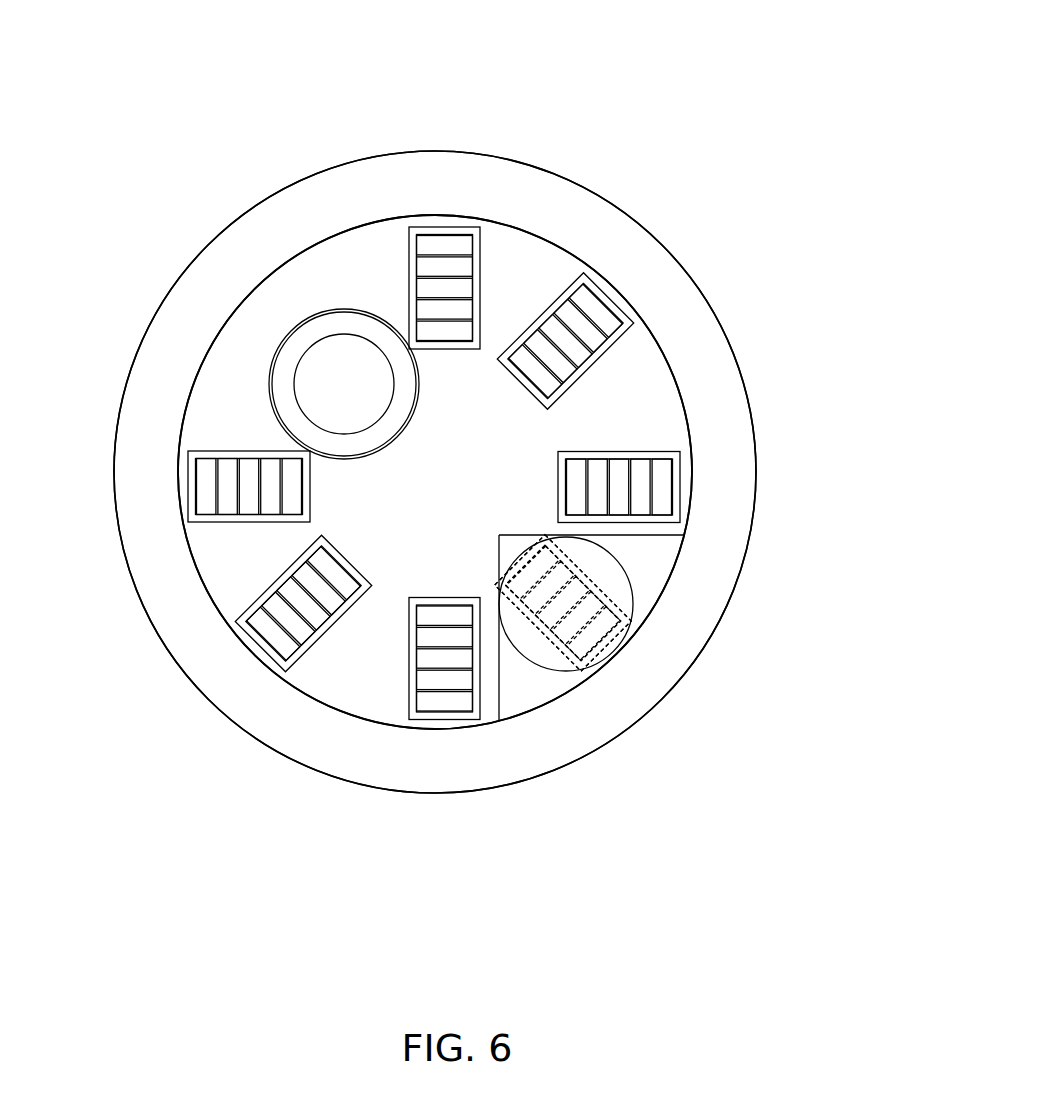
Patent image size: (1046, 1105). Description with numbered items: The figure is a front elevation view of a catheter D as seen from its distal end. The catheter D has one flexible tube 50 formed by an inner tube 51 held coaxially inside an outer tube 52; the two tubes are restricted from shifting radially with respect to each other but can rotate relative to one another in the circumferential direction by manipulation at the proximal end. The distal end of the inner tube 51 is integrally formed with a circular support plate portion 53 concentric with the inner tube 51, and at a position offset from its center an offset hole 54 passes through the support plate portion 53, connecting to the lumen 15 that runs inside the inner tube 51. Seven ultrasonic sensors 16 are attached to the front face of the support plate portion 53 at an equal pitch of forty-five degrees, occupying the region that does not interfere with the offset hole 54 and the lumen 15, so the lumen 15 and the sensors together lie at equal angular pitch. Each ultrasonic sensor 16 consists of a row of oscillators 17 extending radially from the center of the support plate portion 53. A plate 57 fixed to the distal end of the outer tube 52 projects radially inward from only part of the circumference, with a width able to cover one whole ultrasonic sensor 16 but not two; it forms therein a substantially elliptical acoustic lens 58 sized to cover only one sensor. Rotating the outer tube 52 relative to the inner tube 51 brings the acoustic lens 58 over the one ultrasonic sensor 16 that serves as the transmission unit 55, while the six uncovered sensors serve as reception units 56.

The catheter D is at (687, 100).
The lumen 15 is at (322, 330).
The ultrasonic sensor 16 is at (554, 298).
The oscillator 17 is at (457, 290).
The tube 50 is at (746, 250).
The inner tube 51 is at (684, 366).
The outer tube 52 is at (727, 403).
The support plate portion 53 is at (618, 380).
The offset hole 54 is at (294, 348).
The transmission unit 55 is at (612, 574).
The reception unit 56 is at (382, 270).
The plate 57 is at (637, 553).
The acoustic lens 58 is at (537, 633).